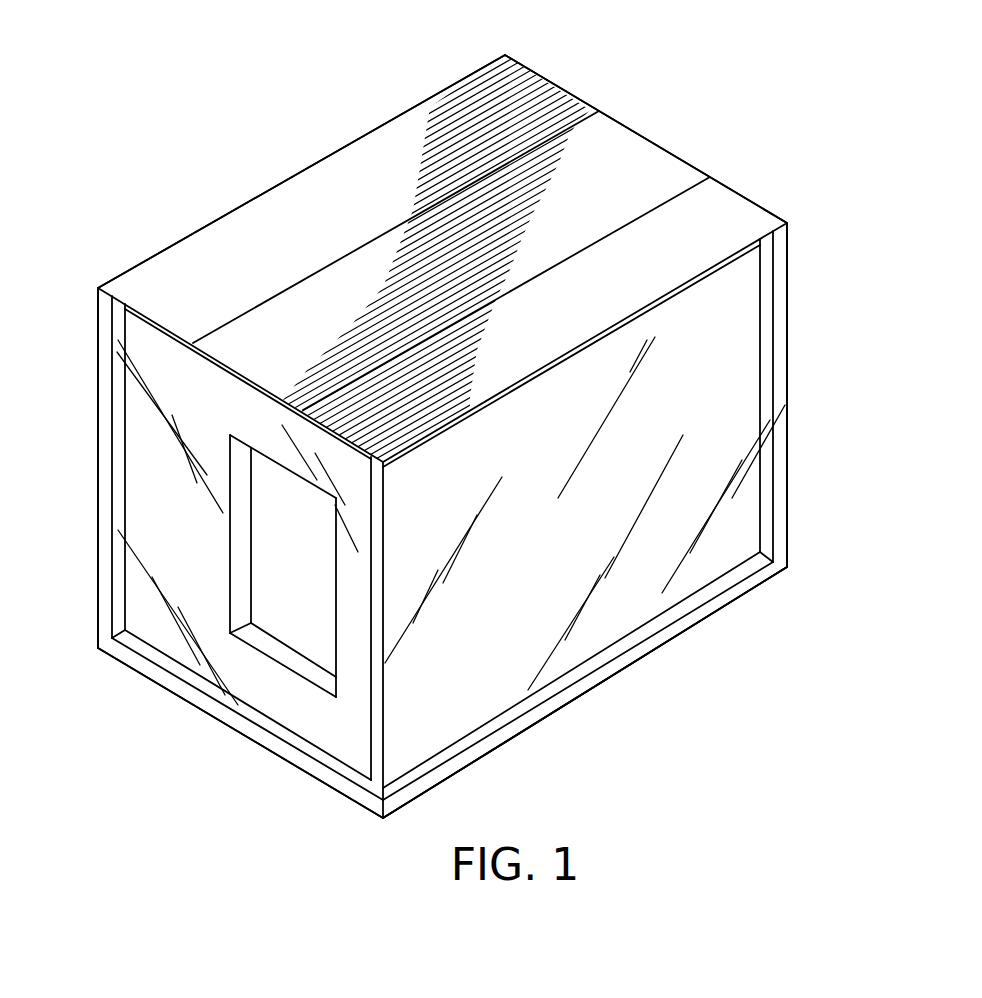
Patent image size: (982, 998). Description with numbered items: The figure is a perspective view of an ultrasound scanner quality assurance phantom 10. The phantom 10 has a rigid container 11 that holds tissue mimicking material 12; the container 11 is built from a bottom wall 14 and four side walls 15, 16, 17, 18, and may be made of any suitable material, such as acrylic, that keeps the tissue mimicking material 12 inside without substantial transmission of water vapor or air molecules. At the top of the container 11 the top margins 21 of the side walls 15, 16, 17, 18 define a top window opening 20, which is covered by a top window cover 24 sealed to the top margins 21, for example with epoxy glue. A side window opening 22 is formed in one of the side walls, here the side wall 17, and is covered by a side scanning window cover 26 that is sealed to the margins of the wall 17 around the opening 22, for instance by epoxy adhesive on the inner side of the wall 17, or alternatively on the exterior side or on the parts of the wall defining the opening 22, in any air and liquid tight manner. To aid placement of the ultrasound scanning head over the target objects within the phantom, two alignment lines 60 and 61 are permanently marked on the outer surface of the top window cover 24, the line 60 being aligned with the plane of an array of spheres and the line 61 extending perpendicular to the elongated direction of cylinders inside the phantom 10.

The ultrasound scanner quality assurance phantom 10 is at (792, 501).
The rigid container 11 is at (712, 565).
The tissue mimicking material 12 is at (740, 282).
The bottom wall 14 is at (603, 687).
The side wall 15 is at (788, 425).
The side wall 16 is at (747, 353).
The side wall 17 is at (128, 512).
The side wall 18 is at (98, 321).
The top window opening 20 is at (722, 183).
The top margins 21 is at (552, 368).
The side window opening 22 is at (238, 605).
The top window cover 24 is at (297, 193).
The side scanning window cover 26 is at (305, 625).
The alignment line 60 is at (307, 278).
The alignment line 61 is at (600, 239).